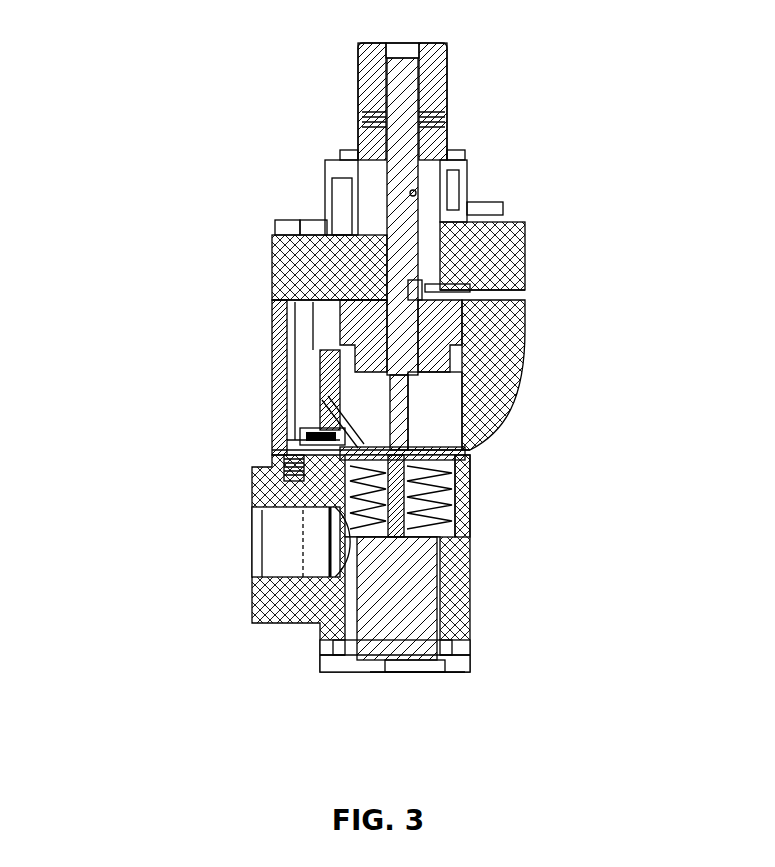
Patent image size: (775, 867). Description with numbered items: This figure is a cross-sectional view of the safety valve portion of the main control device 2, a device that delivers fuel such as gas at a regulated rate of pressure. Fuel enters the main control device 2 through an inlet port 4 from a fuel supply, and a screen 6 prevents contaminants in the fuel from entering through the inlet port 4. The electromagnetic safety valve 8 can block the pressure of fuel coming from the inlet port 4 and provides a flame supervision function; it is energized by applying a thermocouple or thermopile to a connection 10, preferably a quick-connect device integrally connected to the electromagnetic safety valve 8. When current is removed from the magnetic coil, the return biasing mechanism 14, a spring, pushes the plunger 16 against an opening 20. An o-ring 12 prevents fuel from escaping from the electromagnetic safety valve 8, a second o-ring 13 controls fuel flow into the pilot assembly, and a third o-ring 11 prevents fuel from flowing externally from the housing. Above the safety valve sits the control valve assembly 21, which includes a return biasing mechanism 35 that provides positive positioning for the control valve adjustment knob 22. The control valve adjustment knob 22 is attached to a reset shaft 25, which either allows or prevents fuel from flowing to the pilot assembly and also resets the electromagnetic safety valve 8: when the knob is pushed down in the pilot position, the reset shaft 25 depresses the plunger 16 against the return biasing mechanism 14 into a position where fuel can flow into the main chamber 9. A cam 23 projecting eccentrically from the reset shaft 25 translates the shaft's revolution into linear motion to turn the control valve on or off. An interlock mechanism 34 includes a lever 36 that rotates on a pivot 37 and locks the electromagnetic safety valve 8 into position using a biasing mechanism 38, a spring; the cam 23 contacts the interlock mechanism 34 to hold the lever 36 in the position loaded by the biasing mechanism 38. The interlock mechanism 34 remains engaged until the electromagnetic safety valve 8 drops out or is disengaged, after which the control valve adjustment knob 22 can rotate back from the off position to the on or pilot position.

The main control device 2 is at (548, 133).
The inlet port 4 is at (232, 538).
The screen 6 is at (336, 551).
The electromagnetic safety valve 8 is at (420, 597).
The main chamber 9 is at (435, 411).
The connection 10 is at (391, 673).
The third o-ring 11 is at (418, 192).
The o-ring 12 is at (447, 652).
The second o-ring 13 is at (455, 288).
The return biasing mechanism 14 is at (424, 521).
The plunger 16 is at (432, 462).
The opening 20 is at (392, 474).
The control valve assembly 21 is at (474, 78).
The control valve adjustment knob 22 is at (437, 72).
The cam 23 is at (350, 337).
The reset shaft 25 is at (421, 281).
The interlock mechanism 34 is at (306, 406).
The return biasing mechanism 35 is at (452, 113).
The lever 36 is at (318, 377).
The pivot 37 is at (310, 433).
The biasing mechanism 38 is at (300, 474).